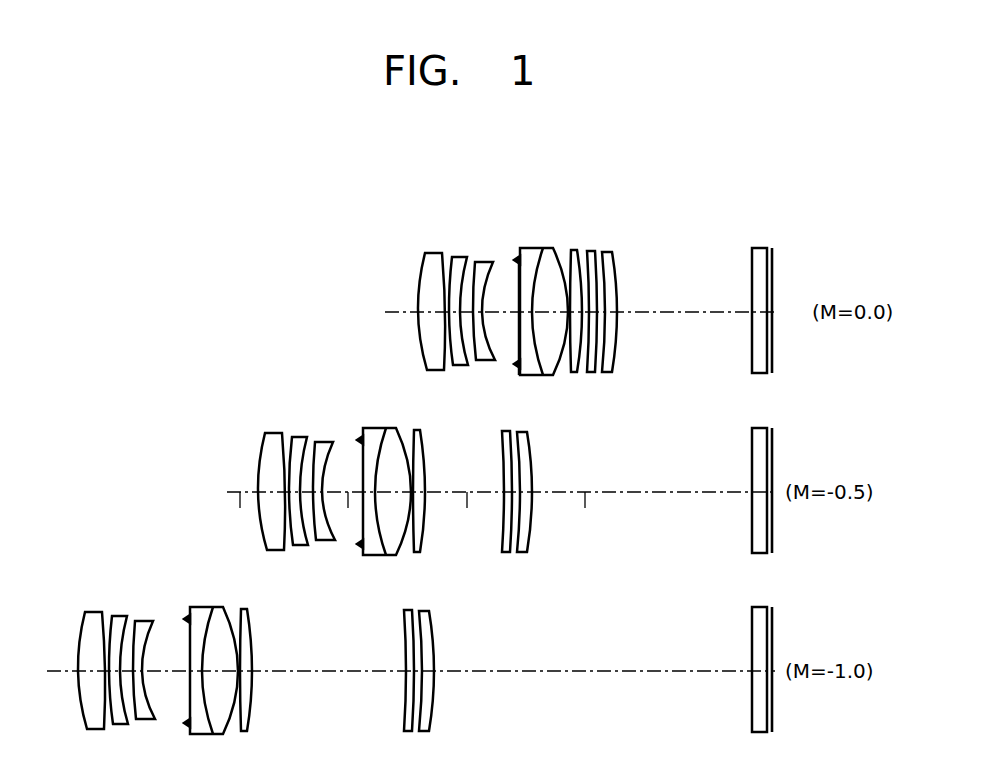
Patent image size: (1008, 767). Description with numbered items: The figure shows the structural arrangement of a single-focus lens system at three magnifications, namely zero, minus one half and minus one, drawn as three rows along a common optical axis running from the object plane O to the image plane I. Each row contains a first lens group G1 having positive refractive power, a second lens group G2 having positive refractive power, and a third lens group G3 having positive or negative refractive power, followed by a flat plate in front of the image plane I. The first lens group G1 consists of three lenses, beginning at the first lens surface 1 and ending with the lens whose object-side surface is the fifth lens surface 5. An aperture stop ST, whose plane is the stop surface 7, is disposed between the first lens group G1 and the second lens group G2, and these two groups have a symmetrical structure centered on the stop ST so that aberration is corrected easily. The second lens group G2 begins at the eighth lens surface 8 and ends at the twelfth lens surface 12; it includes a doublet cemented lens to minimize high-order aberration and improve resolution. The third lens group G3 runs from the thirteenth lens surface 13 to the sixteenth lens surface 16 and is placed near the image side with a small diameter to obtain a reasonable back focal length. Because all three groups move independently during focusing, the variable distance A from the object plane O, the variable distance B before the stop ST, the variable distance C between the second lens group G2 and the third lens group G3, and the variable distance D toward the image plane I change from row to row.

The first lens surface 1 is at (428, 255).
The fifth lens surface 5 is at (478, 262).
The stop surface 7 is at (513, 256).
The eighth lens surface 8 is at (521, 249).
The twelfth lens surface 12 is at (573, 250).
The thirteenth lens surface 13 is at (589, 251).
The sixteenth lens surface 16 is at (616, 252).
The aperture stop ST is at (517, 362).
The first lens group G1 is at (418, 207).
The second lens group G2 is at (580, 207).
The third lens group G3 is at (583, 207).
The object plane O is at (566, 312).
The image plane I is at (772, 310).
The variable distance A is at (240, 516).
The variable distance B is at (348, 516).
The variable distance C is at (467, 516).
The variable distance D is at (584, 516).